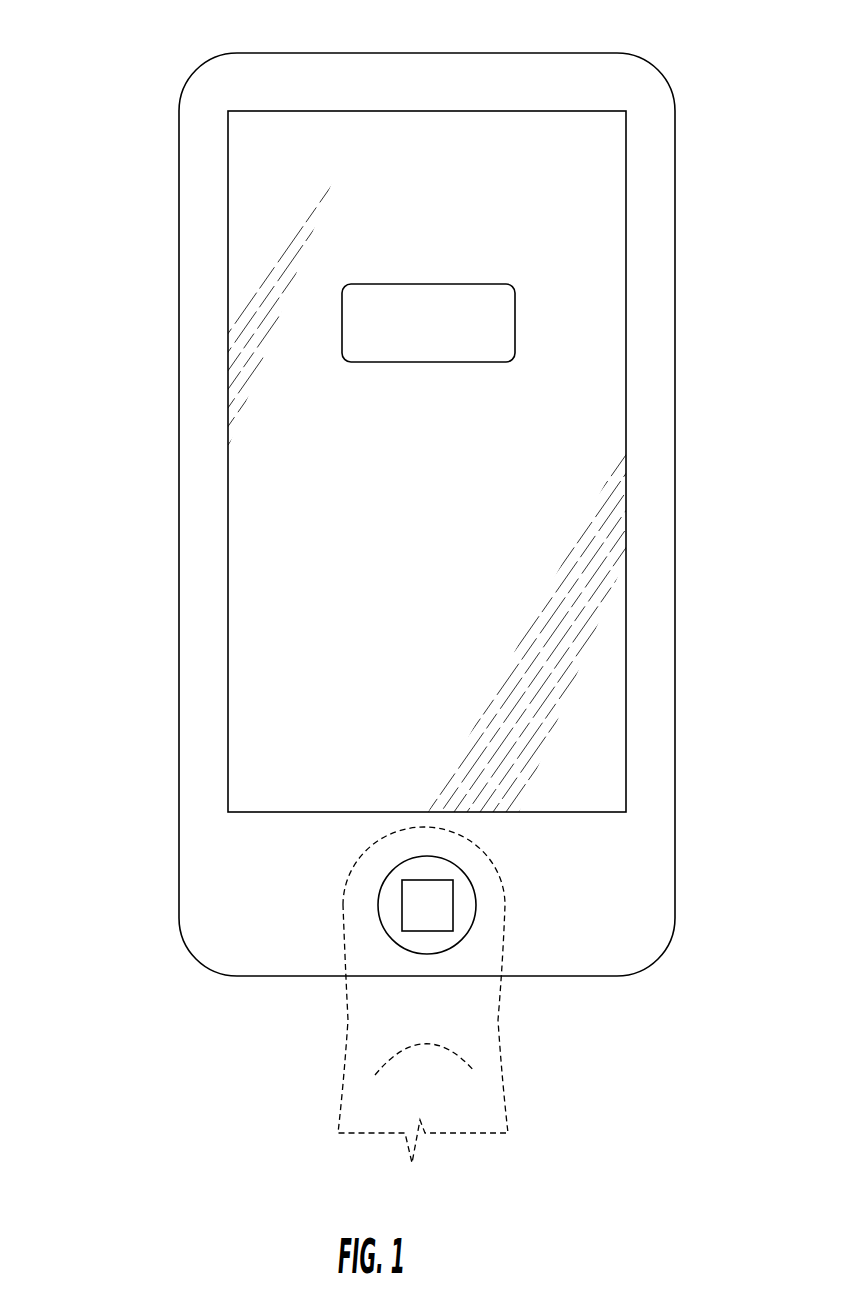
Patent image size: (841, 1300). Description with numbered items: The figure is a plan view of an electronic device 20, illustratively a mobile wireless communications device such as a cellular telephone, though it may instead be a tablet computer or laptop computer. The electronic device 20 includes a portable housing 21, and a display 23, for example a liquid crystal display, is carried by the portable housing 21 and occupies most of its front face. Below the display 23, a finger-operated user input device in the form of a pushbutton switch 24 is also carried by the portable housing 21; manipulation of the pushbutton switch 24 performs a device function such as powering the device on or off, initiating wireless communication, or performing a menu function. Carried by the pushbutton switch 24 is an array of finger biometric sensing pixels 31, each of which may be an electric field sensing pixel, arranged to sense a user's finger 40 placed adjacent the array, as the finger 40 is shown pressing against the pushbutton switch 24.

The electronic device 20 is at (174, 49).
The portable housing 21 is at (179, 233).
The display 23 is at (228, 370).
The pushbutton switch 24 is at (477, 907).
The array of finger biometric sensing pixels 31 is at (425, 931).
The user's finger 40 is at (345, 988).